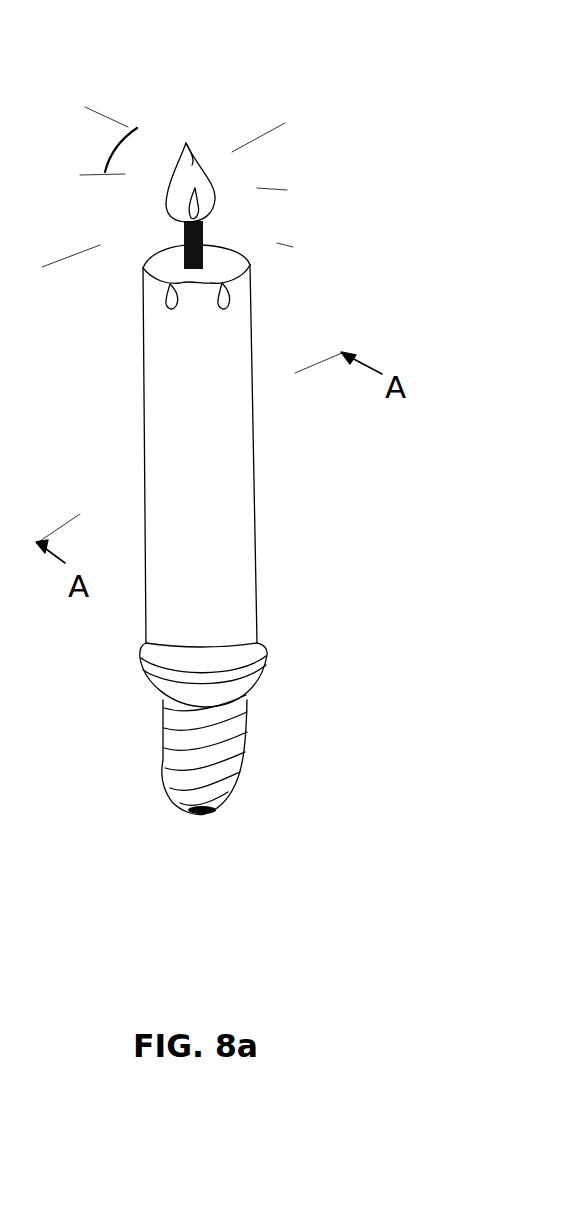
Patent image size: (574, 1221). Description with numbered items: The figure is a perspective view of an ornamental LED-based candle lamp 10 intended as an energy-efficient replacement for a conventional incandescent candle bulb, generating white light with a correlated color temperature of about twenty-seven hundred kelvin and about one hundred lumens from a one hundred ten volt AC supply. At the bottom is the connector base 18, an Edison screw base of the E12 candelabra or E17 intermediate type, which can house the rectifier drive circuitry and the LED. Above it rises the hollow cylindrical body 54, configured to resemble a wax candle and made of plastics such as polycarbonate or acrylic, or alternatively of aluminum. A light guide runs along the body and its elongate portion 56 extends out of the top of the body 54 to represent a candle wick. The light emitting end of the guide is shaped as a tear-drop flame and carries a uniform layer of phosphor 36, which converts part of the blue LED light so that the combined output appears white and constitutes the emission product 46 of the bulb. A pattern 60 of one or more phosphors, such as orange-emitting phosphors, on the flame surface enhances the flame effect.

The candle lamp 10 is at (412, 557).
The connector base 18 is at (212, 777).
The phosphor 36 is at (197, 181).
The emission product 46 is at (167, 179).
The hollow cylindrical body 54 is at (213, 491).
The portion of the light guide 56 is at (200, 242).
The pattern of phosphors 60 is at (198, 215).